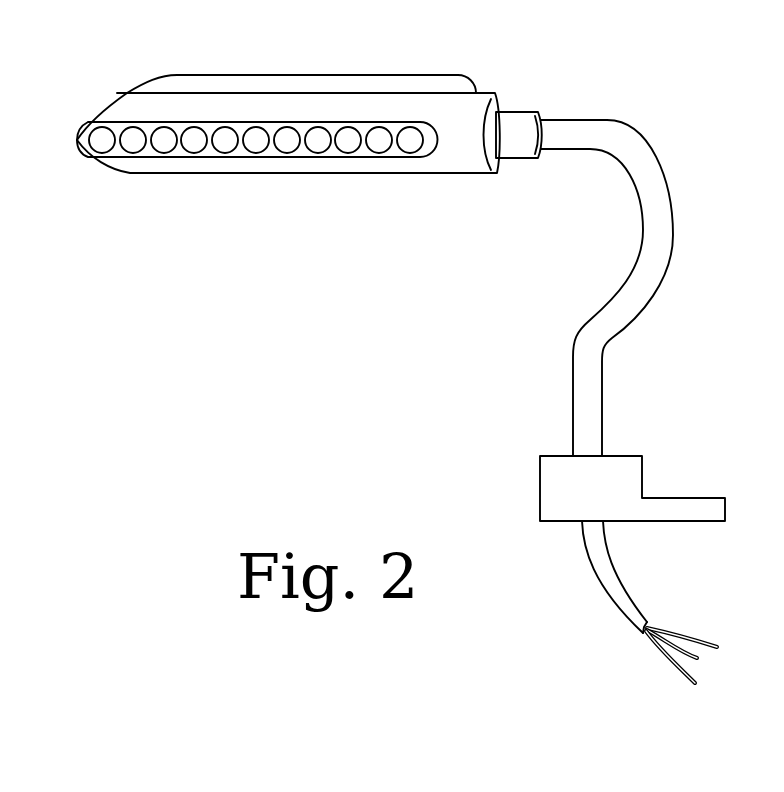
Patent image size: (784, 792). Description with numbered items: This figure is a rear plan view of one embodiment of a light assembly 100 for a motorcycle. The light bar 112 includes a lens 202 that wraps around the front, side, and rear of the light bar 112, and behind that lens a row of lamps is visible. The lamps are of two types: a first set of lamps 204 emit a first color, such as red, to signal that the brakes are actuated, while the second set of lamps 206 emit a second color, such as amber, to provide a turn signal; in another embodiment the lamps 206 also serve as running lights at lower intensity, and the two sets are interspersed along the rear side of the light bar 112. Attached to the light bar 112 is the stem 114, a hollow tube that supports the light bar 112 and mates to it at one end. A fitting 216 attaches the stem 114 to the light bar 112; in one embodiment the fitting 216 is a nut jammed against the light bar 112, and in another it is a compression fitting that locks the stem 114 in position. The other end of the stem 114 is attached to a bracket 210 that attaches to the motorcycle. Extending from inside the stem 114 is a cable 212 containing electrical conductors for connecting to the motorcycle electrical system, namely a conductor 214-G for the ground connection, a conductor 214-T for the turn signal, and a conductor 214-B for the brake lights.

The light assembly 100 is at (260, 380).
The light bar 112 is at (373, 75).
The stem 114 is at (632, 140).
The lens 202 is at (363, 158).
The first set of lamps 204 is at (256, 127).
The second set of lamps 206 is at (89, 141).
The bracket 210 is at (540, 477).
The cable 212 is at (597, 597).
The brake light conductor 214-B is at (675, 627).
The ground conductor 214-G is at (675, 670).
The turn signal conductor 214-T is at (683, 660).
The fitting 216 is at (523, 112).